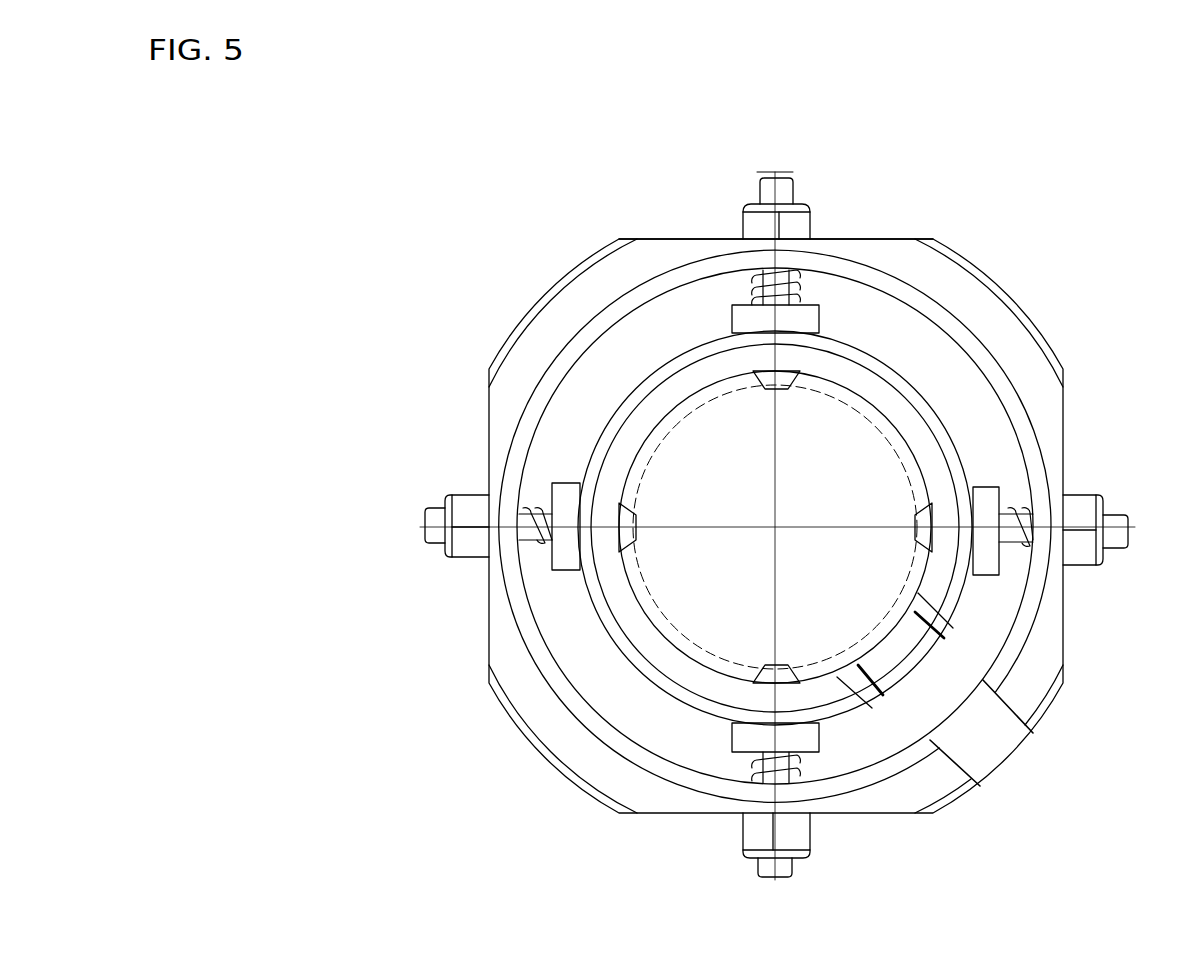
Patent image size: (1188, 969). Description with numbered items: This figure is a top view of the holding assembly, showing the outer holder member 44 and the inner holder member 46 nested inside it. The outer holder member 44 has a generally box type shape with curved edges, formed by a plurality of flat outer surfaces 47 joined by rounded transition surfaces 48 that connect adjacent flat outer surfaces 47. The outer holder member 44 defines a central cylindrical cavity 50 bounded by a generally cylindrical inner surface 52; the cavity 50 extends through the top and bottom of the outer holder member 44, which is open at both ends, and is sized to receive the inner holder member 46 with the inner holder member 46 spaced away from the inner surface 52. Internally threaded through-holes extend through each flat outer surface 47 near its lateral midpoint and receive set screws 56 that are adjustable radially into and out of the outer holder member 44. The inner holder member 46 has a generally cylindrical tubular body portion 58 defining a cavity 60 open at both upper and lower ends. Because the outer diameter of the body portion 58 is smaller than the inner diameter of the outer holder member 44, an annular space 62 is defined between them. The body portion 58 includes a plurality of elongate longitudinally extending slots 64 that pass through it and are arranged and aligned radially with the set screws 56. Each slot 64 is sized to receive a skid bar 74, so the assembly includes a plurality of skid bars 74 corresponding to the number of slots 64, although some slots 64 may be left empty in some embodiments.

The outer holder member 44 is at (992, 328).
The inner holder member 46 is at (845, 370).
The flat outer surfaces 47 is at (648, 238).
The rounded transition surfaces 48 is at (532, 303).
The central cylindrical cavity 50 is at (573, 620).
The cylindrical inner surface 52 is at (522, 593).
The set screws 56 is at (785, 192).
The tubular body portion 58 is at (632, 622).
The cavity 60 is at (693, 470).
The annular space 62 is at (975, 428).
The slots 64 is at (820, 723).
The skid bar 74 is at (990, 560).